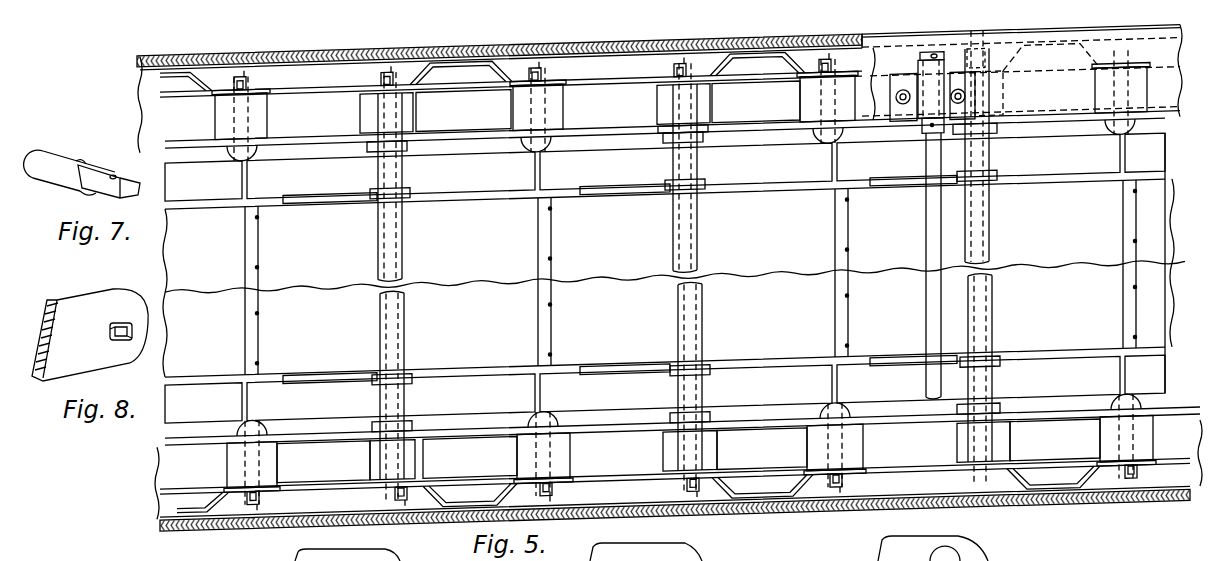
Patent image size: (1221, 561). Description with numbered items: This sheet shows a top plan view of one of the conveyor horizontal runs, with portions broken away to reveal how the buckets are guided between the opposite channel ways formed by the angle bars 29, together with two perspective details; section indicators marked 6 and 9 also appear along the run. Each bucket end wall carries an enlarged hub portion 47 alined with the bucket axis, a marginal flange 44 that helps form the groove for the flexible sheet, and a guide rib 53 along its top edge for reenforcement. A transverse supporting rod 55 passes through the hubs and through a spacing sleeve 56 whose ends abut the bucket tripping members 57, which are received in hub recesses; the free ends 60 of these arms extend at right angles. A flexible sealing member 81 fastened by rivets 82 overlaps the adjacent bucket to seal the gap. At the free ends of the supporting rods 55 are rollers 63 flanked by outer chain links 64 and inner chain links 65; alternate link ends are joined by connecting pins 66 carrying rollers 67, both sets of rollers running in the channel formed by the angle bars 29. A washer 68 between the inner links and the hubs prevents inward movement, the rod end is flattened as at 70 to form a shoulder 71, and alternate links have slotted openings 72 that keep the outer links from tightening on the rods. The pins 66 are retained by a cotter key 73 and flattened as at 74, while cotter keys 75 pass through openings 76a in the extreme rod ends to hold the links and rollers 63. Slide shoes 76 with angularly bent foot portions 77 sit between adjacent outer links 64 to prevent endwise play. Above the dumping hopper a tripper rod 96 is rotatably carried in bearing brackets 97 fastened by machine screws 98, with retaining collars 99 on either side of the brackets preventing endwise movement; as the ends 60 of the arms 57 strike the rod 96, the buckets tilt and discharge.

In FIG. 5, the angle bars 29 is at (325, 56).
In FIG. 5, the flange 44 is at (458, 202).
In FIG. 5, the hub portion 47 is at (408, 147).
In FIG. 5, the guide rib 53 is at (665, 278).
In FIG. 5, the supporting rod 55 is at (380, 178).
In FIG. 7, the supporting rod 55 is at (46, 160).
In FIG. 5, the spacing sleeve 56 is at (403, 266).
In FIG. 5, the bucket tripping members 57 is at (322, 203).
In FIG. 5, the free ends of tripping arms 60 is at (334, 552).
In FIG. 5, the rollers 63 is at (413, 116).
In FIG. 5, the outer chain links 64 is at (318, 92).
In FIG. 8, the outer chain links 64 is at (73, 300).
In FIG. 5, the inner chain links 65 is at (321, 140).
In FIG. 5, the connecting pins 66 is at (268, 114).
In FIG. 5, the rollers 67 is at (268, 126).
In FIG. 5, the washer 68 is at (703, 140).
In FIG. 5, the flattened portion 70 is at (387, 68).
In FIG. 7, the flattened portion 70 is at (104, 165).
In FIG. 7, the shoulder 71 is at (88, 160).
In FIG. 8, the slotted openings 72 is at (124, 322).
In FIG. 5, the cotter key 73 is at (234, 84).
In FIG. 5, the flattened portion 74 is at (248, 84).
In FIG. 5, the cotter keys or pins 75 is at (381, 82).
In FIG. 5, the slide shoes 76 is at (440, 62).
In FIG. 7, the openings 76a is at (116, 176).
In FIG. 5, the foot portions 77 is at (405, 70).
In FIG. 5, the flexible sealing member 81 is at (259, 238).
In FIG. 5, the rivets 82 is at (259, 265).
In FIG. 5, the tripper rod 96 is at (926, 246).
In FIG. 5, the bearing brackets 97 is at (917, 72).
In FIG. 5, the machine screws 98 is at (896, 97).
In FIG. 5, the retaining collars 99 is at (934, 62).
In FIG. 5, the section line 6 is at (1172, 445).
In FIG. 5, the section line 9 is at (983, 560).